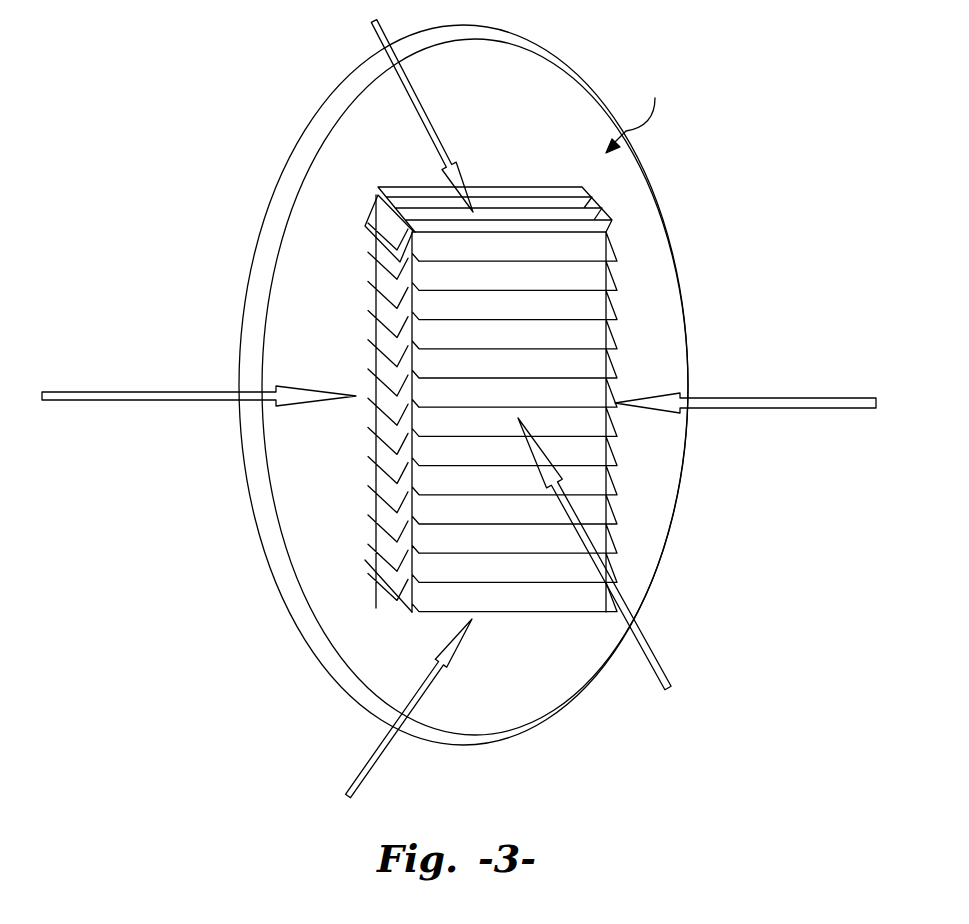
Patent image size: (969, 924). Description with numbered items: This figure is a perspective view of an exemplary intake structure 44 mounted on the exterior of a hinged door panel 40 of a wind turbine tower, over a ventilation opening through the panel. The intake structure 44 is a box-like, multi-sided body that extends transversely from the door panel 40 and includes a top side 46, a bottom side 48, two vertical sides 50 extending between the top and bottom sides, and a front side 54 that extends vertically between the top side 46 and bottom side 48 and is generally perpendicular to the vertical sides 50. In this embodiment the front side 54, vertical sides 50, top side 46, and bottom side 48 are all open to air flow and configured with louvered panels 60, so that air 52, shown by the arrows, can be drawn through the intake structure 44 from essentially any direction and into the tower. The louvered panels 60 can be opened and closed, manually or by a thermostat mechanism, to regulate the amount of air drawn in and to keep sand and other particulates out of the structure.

The door panel 40 is at (568, 680).
The intake structure 44 is at (638, 114).
The top side 46 is at (388, 197).
The bottom side 48 is at (496, 617).
The vertical sides 50 is at (378, 326).
The air 52 is at (133, 390).
The front side 54 is at (598, 330).
The louvered panels 60 is at (536, 188).